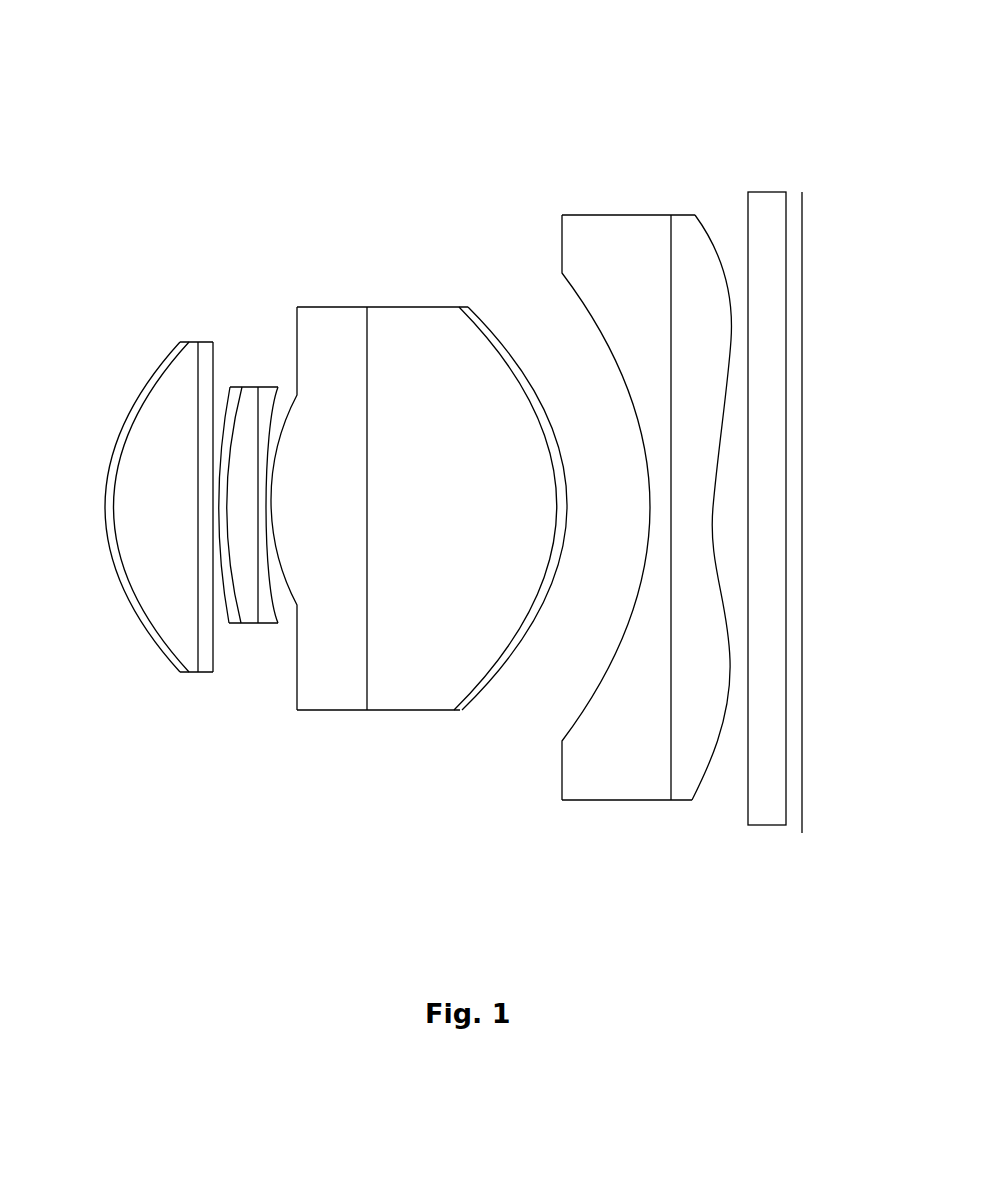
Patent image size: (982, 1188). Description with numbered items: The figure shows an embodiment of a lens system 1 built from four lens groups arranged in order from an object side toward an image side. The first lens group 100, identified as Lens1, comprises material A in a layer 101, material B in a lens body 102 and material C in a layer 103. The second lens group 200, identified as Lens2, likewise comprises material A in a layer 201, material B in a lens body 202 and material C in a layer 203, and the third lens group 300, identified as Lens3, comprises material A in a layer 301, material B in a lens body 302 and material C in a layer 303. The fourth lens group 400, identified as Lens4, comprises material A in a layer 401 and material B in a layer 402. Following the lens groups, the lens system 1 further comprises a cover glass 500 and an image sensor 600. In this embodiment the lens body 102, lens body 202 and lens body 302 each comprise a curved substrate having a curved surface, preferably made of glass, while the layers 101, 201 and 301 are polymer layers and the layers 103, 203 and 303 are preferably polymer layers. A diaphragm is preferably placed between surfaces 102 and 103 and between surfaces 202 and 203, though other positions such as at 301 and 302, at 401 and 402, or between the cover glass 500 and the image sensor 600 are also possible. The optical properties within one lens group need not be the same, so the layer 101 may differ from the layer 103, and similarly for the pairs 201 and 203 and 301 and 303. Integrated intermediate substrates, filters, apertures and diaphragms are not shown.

The lens system 1 is at (120, 154).
The first lens group 100 is at (141, 346).
The layer 101 is at (98, 534).
The lens body 102 is at (168, 643).
The layer 103 is at (201, 668).
The second lens group 200 is at (260, 374).
The layer 201 is at (230, 623).
The lens body 202 is at (246, 620).
The layer 203 is at (263, 620).
The third lens group 300 is at (406, 288).
The layer 301 is at (324, 700).
The lens body 302 is at (390, 703).
The layer 303 is at (456, 717).
The fourth lens group 400 is at (636, 195).
The layer 401 is at (607, 780).
The layer 402 is at (696, 769).
The cover glass 500 is at (760, 818).
The image sensor 600 is at (818, 260).